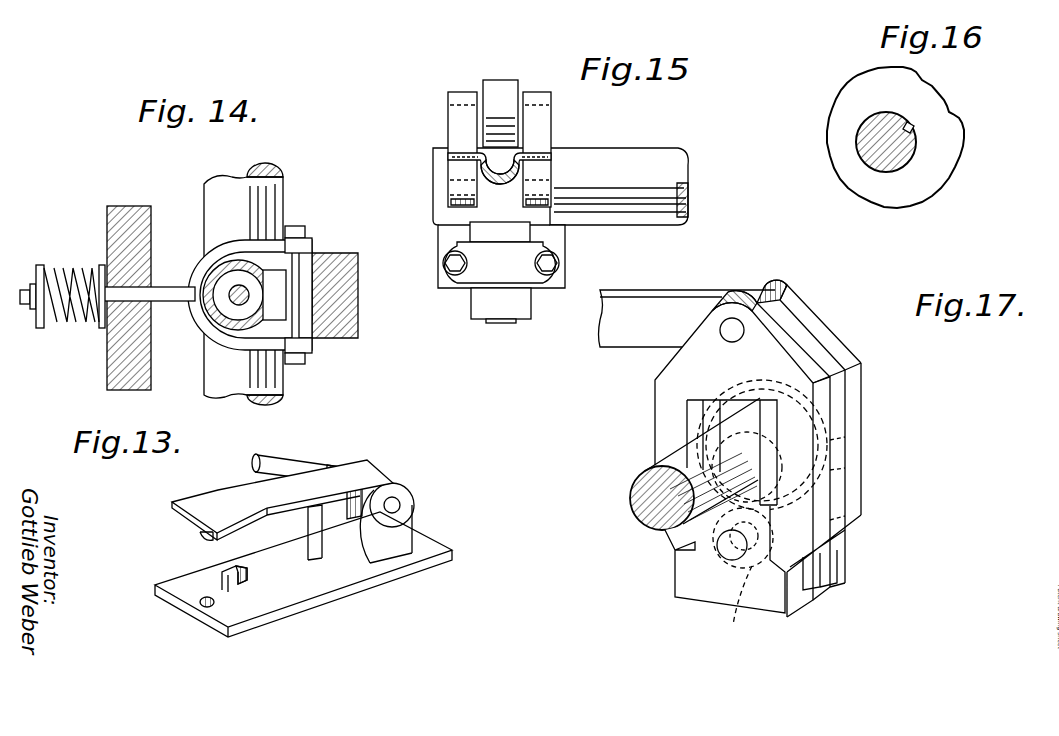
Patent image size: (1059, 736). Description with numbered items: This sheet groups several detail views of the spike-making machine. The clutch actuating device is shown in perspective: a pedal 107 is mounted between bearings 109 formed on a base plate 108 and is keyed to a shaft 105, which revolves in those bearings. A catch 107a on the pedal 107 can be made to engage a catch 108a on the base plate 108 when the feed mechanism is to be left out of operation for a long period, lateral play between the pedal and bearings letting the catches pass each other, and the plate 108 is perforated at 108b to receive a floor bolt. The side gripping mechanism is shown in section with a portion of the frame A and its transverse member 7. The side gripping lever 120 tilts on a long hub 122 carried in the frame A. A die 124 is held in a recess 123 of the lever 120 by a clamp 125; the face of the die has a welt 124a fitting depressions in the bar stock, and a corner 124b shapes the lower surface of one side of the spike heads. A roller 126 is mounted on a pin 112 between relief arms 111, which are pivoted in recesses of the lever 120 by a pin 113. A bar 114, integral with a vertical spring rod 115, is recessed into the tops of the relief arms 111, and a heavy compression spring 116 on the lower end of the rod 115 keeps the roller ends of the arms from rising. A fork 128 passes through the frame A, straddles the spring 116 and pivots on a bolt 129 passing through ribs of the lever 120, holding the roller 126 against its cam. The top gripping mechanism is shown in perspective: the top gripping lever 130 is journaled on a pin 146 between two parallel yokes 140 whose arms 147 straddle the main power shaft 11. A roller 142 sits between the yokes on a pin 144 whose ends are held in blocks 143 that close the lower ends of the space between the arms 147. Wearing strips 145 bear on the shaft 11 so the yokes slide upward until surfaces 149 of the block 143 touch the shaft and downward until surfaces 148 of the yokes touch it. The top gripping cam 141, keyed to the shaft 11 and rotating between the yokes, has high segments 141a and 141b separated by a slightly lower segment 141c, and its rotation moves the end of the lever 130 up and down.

In FIG. 14, the transverse member 7 is at (68, 265).
In FIG. 14, the frame A is at (88, 373).
In FIG. 16, the main power shaft 11 is at (870, 160).
In FIG. 17, the main power shaft 11 is at (645, 522).
In FIG. 13, the shaft 105 is at (282, 460).
In FIG. 13, the pedal 107 is at (190, 506).
In FIG. 13, the catch 107a is at (205, 540).
In FIG. 13, the base plate 108 is at (340, 600).
In FIG. 13, the catch 108a is at (248, 575).
In FIG. 13, the perforation 108b is at (200, 604).
In FIG. 13, the bearings 109 is at (395, 484).
In FIG. 15, the relief arms 111 is at (540, 92).
In FIG. 15, the pin 112 is at (450, 133).
In FIG. 15, the pin 113 is at (452, 175).
In FIG. 15, the bar 114 is at (557, 160).
In FIG. 14, the vertical spring rod 115 is at (233, 298).
In FIG. 15, the vertical spring rod 115 is at (535, 150).
In FIG. 14, the compression spring 116 is at (216, 320).
In FIG. 14, the side gripping lever 120 is at (361, 340).
In FIG. 14, the long hub 122 is at (281, 195).
In FIG. 15, the long hub 122 is at (640, 226).
In FIG. 15, the recess 123 is at (470, 230).
In FIG. 15, the die 124 is at (480, 318).
In FIG. 15, the welt 124a is at (502, 324).
In FIG. 15, the corner 124b is at (530, 320).
In FIG. 15, the clamp 125 is at (468, 282).
In FIG. 15, the roller 126 is at (470, 95).
In FIG. 14, the fork 128 is at (200, 268).
In FIG. 14, the bolt 129 is at (297, 365).
In FIG. 17, the top gripping lever 130 is at (642, 298).
In FIG. 17, the yoke 140 is at (777, 430).
In FIG. 16, the top gripping cam 141 is at (863, 97).
In FIG. 17, the top gripping cam 141 is at (835, 430).
In FIG. 16, the high segment 141a is at (966, 158).
In FIG. 16, the high segment 141b is at (920, 70).
In FIG. 16, the lower segment 141c is at (948, 108).
In FIG. 17, the roller 142 is at (745, 600).
In FIG. 17, the blocks 143 is at (716, 585).
In FIG. 17, the pin 144 is at (717, 548).
In FIG. 17, the wearing strips 145 is at (693, 433).
In FIG. 17, the pin 146 is at (732, 318).
In FIG. 17, the arms 147 is at (700, 592).
In FIG. 17, the surfaces 148 is at (743, 397).
In FIG. 17, the surfaces 149 is at (745, 498).